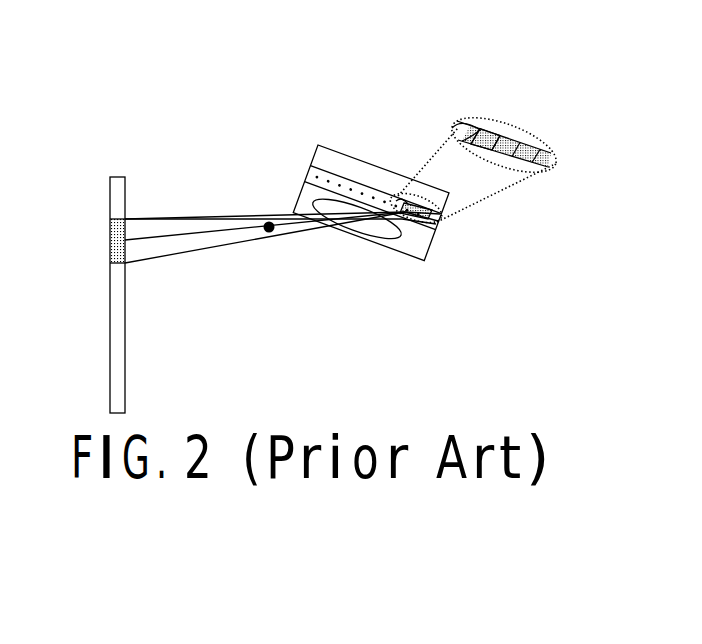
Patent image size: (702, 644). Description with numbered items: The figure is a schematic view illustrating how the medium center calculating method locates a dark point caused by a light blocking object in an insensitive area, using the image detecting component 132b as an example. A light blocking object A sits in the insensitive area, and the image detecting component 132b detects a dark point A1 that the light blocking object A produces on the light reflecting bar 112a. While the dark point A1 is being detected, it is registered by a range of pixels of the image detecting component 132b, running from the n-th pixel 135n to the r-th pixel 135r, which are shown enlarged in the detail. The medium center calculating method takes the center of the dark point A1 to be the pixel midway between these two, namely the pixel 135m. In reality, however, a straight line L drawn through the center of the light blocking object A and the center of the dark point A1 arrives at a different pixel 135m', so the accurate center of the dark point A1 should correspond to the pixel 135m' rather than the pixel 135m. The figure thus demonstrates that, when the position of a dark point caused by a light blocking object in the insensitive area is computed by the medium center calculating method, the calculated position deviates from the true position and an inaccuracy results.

The light reflecting bar 112a is at (115, 202).
The dark point A1 is at (103, 241).
The light blocking object A is at (268, 213).
The straight line L is at (284, 231).
The image detecting component 132b is at (327, 152).
The n-th pixel 135n is at (452, 128).
The pixel 135m' is at (512, 121).
The (n+r)/2-th pixel 135m is at (539, 141).
The r-th pixel 135r is at (549, 166).